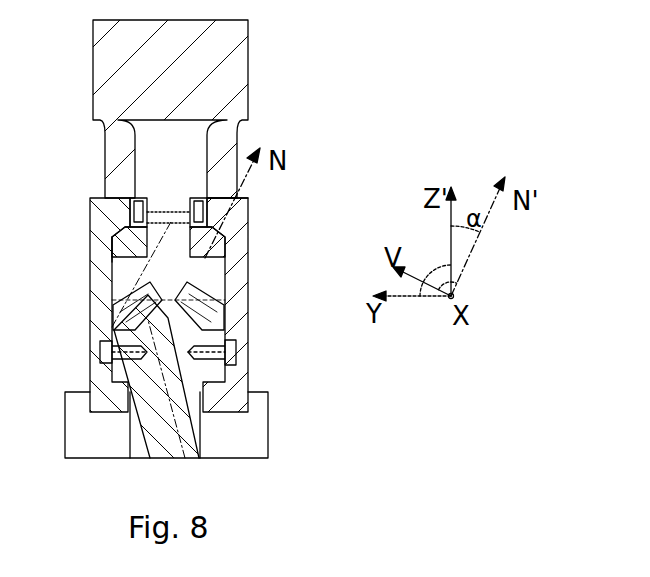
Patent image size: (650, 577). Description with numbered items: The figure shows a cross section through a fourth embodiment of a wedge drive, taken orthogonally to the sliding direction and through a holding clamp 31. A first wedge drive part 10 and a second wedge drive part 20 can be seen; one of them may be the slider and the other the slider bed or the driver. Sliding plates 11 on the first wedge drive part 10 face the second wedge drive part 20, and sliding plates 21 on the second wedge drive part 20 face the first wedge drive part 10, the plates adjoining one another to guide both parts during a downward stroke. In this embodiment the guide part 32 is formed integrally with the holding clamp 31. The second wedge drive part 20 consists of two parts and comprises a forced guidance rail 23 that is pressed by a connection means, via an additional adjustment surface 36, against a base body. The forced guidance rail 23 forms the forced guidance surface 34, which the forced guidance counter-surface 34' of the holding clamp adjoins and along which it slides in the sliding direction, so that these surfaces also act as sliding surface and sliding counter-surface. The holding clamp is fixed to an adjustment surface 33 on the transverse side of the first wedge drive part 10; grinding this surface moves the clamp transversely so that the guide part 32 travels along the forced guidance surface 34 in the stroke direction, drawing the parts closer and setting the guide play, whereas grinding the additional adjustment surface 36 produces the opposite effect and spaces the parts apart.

The first wedge drive part 10 is at (195, 458).
The sliding plates 11 is at (113, 330).
The second wedge drive part 20 is at (248, 92).
The sliding plates 21 is at (113, 313).
The forced guidance rail 23 is at (225, 256).
The holding clamp 31 is at (203, 237).
The guide part 32 is at (249, 199).
The adjustment surface 33 is at (95, 373).
The forced guidance surface 34 is at (310, 288).
The forced guidance counter-surface 34' is at (73, 249).
The additional adjustment surface 36 is at (175, 207).